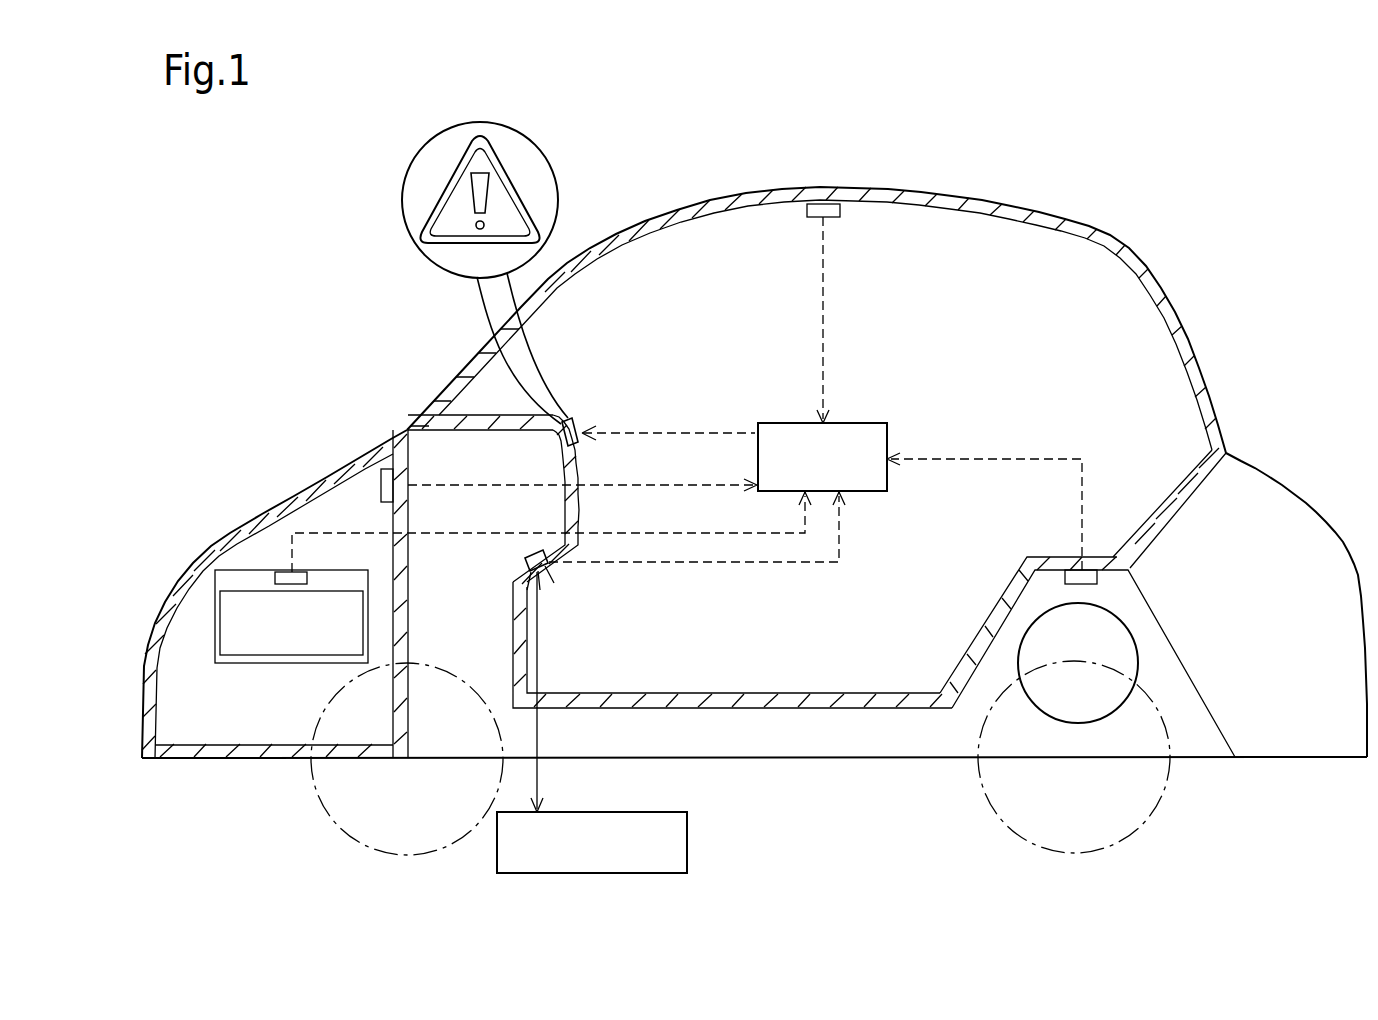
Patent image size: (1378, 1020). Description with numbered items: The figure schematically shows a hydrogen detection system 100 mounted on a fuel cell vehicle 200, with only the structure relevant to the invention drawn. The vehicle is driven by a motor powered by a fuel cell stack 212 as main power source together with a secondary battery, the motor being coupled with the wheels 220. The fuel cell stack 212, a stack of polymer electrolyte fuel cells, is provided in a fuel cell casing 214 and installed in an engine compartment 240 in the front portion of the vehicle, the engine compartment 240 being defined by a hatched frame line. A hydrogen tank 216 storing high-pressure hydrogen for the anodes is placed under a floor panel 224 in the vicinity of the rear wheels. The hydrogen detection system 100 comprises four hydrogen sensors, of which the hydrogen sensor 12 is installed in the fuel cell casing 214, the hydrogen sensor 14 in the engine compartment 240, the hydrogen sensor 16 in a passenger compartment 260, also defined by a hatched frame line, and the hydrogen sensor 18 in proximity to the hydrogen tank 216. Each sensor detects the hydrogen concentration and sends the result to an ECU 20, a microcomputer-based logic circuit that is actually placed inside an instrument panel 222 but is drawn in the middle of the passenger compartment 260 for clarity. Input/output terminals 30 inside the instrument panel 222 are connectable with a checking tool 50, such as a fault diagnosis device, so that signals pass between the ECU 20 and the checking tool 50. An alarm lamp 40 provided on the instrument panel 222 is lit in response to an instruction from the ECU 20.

The hydrogen detection system 100 is at (1150, 176).
The fuel cell vehicle 200 is at (945, 187).
The passenger compartment 260 is at (665, 235).
The engine compartment 240 is at (330, 505).
The instrument panel 222 is at (493, 414).
The floor panel 224 is at (778, 710).
The wheels 220 is at (323, 807).
The fuel cell casing 214 is at (213, 648).
The fuel cell stack 212 is at (267, 658).
The hydrogen tank 216 is at (1138, 660).
The hydrogen sensor 12 is at (278, 573).
The hydrogen sensor 14 is at (383, 469).
The hydrogen sensor 16 is at (813, 204).
The hydrogen sensor 18 is at (1097, 578).
The ECU 20 is at (868, 423).
The input/output terminals 30 is at (525, 561).
The alarm lamp 40 is at (567, 420).
The checking tool 50 is at (688, 843).